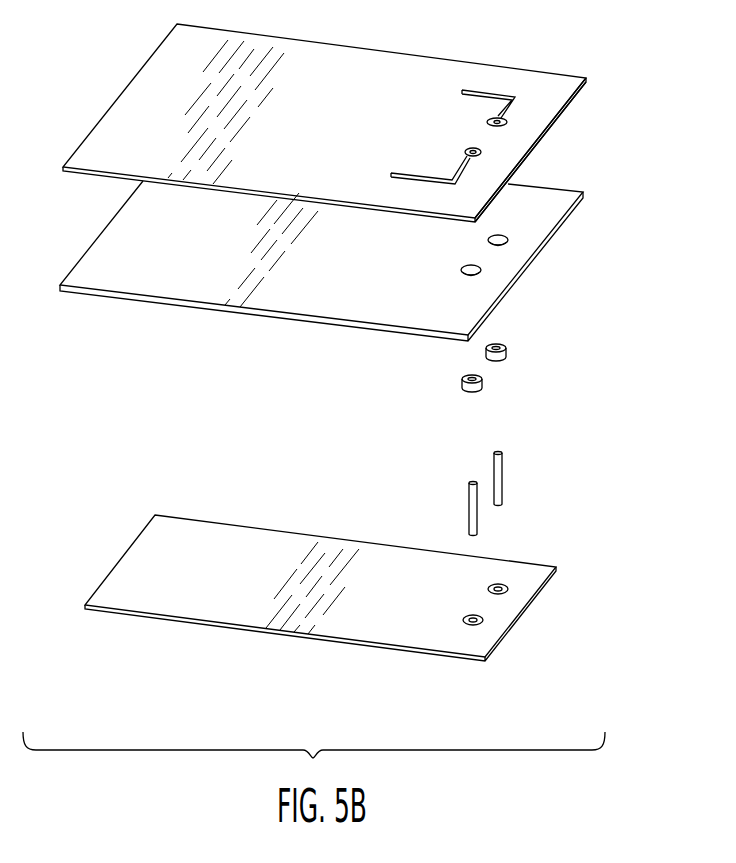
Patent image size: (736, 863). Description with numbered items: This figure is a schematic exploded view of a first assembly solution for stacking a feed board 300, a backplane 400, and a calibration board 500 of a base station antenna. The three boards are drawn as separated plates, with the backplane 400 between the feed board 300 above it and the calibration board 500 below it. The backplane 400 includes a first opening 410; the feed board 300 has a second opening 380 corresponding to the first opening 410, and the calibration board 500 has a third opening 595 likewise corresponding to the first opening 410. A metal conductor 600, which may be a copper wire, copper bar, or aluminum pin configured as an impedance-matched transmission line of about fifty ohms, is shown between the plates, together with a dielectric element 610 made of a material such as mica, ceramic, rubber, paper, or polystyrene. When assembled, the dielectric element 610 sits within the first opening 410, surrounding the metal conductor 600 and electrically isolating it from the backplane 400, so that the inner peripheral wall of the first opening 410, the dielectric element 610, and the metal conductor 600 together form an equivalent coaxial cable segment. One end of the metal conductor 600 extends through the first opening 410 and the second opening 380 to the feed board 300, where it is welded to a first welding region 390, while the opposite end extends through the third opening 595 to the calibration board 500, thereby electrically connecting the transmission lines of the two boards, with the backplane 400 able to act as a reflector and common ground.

The feed board 300 is at (132, 107).
The second opening 380 is at (521, 130).
The first welding region 390 is at (500, 116).
The backplane 400 is at (107, 270).
The first opening 410 is at (515, 255).
The calibration board 500 is at (122, 582).
The third opening 595 is at (503, 607).
The metal conductor 600 is at (503, 475).
The dielectric element 610 is at (506, 352).